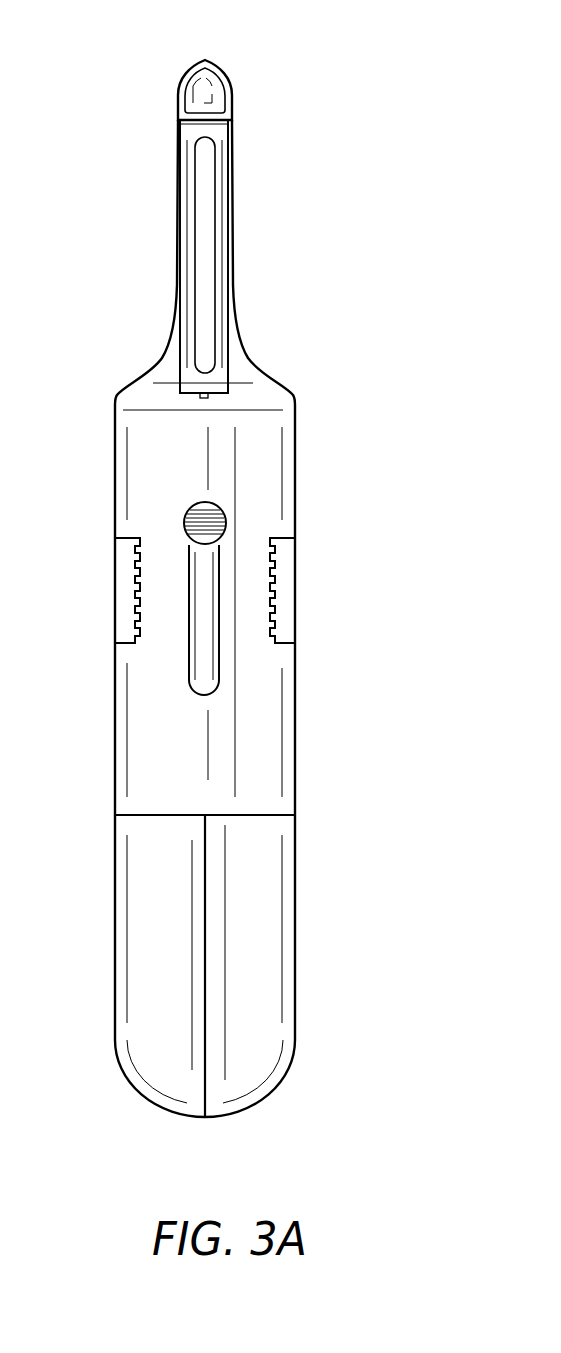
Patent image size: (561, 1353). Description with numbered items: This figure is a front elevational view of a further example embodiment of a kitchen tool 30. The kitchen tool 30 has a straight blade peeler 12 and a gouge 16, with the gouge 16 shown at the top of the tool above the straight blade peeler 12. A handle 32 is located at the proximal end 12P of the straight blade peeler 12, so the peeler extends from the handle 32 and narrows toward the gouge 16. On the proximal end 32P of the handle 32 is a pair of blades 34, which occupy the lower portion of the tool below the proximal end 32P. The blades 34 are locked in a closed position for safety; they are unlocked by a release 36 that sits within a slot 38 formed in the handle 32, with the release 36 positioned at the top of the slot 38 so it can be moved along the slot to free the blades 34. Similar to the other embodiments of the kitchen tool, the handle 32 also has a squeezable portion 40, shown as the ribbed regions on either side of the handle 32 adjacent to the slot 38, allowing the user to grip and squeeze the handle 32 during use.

The straight blade peeler 12 is at (232, 241).
The proximal end of the straight blade peeler 12P is at (232, 392).
The gouge 16 is at (218, 78).
The kitchen tool 30 is at (270, 583).
The handle 32 is at (270, 730).
The proximal end of the handle 32P is at (295, 815).
The pair of blades 34 is at (260, 960).
The release 36 is at (218, 512).
The slot 38 is at (207, 615).
The squeezable portion 40 is at (332, 602).